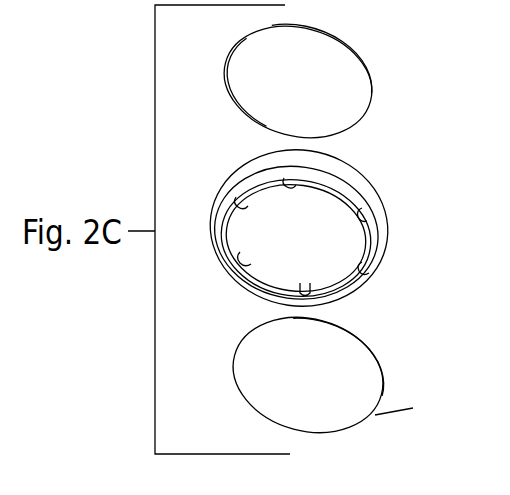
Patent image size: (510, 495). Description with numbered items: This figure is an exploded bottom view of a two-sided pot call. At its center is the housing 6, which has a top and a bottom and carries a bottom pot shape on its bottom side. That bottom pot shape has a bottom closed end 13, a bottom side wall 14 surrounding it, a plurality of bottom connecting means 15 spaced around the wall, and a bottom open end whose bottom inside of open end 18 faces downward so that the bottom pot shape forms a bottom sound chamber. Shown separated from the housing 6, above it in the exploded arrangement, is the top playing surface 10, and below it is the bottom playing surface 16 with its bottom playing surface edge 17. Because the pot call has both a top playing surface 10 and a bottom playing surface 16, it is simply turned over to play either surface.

The housing 6 is at (360, 202).
The top playing surface 10 is at (330, 108).
The bottom closed end 13 is at (270, 218).
The bottom side wall 14 is at (277, 283).
The bottom connecting means 15 is at (243, 258).
The bottom playing surface 16 is at (275, 383).
The bottom playing surface edge 17 is at (409, 411).
The bottom inside of open end 18 is at (322, 300).